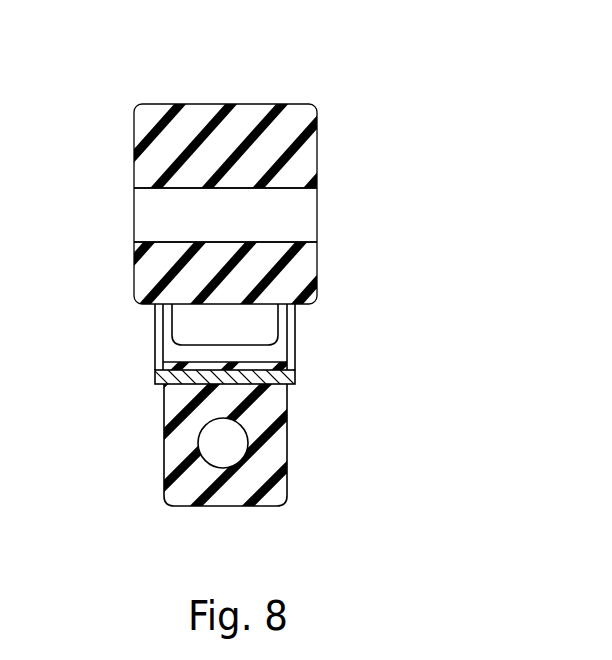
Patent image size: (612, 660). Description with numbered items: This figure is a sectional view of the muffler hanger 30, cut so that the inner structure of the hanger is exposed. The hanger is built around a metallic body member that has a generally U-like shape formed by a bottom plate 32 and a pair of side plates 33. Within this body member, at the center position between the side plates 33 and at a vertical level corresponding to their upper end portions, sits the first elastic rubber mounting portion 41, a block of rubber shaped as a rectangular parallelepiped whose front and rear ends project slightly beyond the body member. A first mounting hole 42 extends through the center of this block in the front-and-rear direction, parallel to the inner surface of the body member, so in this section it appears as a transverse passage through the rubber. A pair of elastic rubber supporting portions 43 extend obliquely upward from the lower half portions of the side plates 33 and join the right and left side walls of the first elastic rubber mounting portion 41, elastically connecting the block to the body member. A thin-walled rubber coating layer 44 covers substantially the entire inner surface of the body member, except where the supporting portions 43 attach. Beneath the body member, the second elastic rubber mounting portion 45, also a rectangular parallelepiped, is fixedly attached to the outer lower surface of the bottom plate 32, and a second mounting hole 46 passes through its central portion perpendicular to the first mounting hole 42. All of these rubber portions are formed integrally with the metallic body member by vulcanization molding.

The muffler hanger 30 is at (308, 88).
The first elastic rubber mounting portion 41 is at (208, 104).
The first mounting hole 42 is at (293, 188).
The elastic rubber supporting portions 43 is at (265, 315).
The side plates 33 is at (295, 337).
The rubber coating layer 44 is at (172, 352).
The bottom plate 32 is at (295, 374).
The second elastic rubber mounting portion 45 is at (287, 460).
The second mounting hole 46 is at (207, 453).